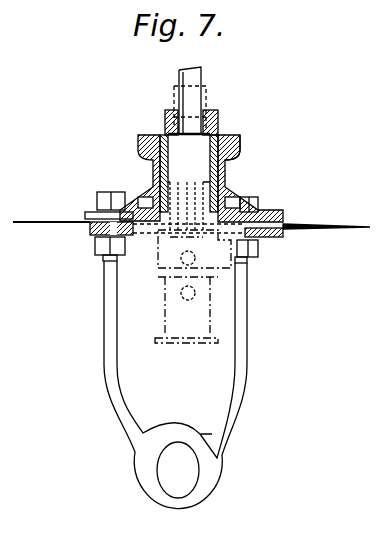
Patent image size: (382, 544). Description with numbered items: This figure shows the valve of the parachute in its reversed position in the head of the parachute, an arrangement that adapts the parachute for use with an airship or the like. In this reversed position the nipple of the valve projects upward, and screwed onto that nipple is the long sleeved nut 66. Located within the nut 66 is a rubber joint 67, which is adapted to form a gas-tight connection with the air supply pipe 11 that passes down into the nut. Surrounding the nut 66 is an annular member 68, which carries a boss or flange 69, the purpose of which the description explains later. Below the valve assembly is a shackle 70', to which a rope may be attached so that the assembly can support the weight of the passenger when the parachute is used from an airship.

The air supply pipe 11 is at (197, 77).
The long sleeved nut 66 is at (227, 136).
The rubber joint 67 is at (167, 114).
The annular member 68 is at (153, 176).
The boss or flange 69 is at (243, 146).
The shackle 70' is at (194, 385).